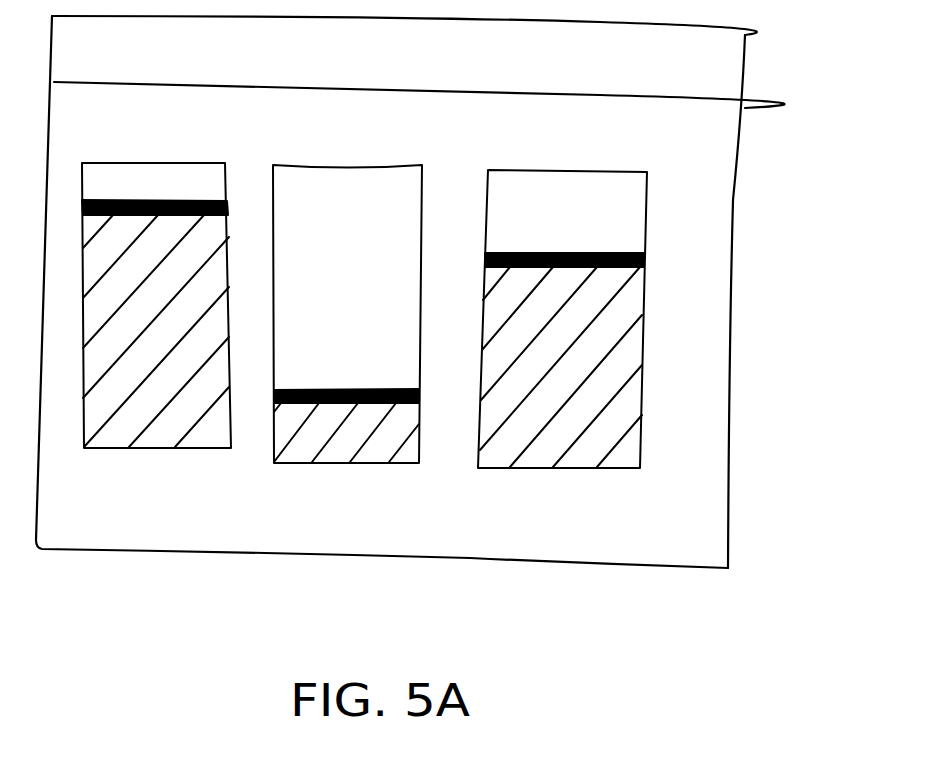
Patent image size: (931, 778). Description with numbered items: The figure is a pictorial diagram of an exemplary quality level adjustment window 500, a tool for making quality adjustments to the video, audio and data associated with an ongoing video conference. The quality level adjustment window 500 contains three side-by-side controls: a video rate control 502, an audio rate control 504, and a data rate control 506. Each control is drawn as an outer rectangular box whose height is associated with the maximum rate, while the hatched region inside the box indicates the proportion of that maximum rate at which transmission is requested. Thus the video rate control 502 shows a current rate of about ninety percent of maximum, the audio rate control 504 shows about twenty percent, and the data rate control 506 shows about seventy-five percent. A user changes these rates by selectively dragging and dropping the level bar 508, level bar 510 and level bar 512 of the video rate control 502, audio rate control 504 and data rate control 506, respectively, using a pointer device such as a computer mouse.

The quality level adjustment window 500 is at (733, 163).
The video rate control 502 is at (226, 479).
The audio rate control 504 is at (417, 482).
The data rate control 506 is at (630, 482).
The level bar 508 is at (224, 205).
The level bar 510 is at (420, 395).
The level bar 512 is at (644, 262).